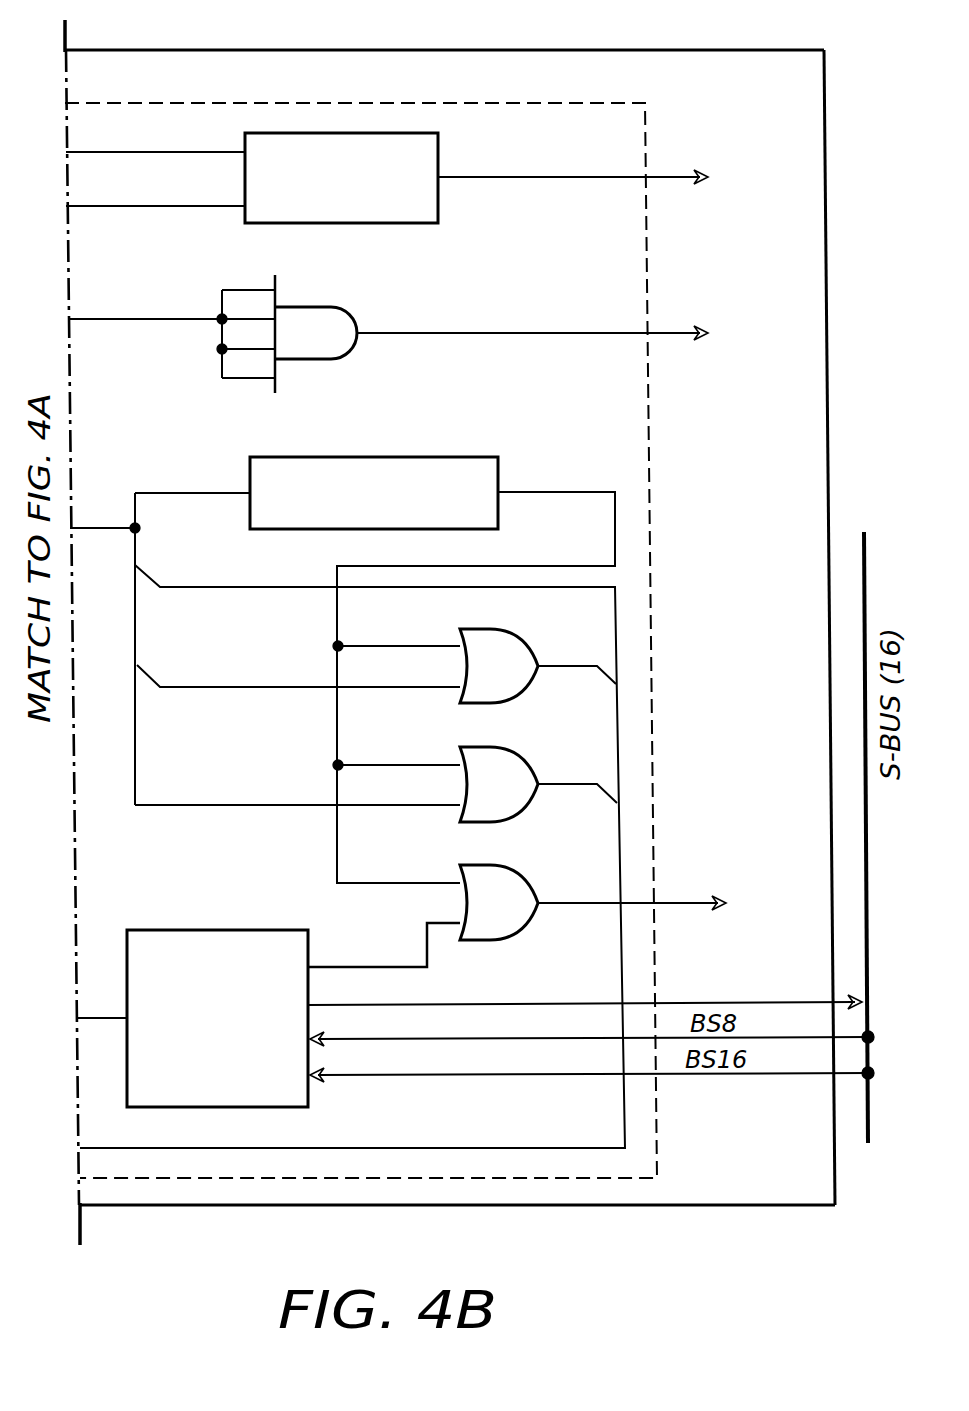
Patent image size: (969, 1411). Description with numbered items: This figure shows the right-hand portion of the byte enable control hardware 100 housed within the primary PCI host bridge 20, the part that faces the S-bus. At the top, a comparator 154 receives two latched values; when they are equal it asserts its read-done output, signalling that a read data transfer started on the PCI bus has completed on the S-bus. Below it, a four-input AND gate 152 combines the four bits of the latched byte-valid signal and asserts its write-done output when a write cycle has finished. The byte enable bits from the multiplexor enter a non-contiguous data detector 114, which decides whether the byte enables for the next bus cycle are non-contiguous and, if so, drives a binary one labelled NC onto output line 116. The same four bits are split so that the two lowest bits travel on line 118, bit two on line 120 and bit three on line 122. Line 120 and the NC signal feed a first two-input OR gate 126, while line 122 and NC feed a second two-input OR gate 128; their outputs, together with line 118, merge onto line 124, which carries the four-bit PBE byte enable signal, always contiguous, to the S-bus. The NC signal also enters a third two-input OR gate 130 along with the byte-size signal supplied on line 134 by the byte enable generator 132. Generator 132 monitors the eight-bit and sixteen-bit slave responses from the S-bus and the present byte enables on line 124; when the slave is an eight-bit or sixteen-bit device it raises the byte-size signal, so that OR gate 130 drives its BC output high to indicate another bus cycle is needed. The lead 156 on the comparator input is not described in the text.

The primary PCI host bridge 20 is at (368, 50).
The byte enable control hardware 100 is at (405, 103).
The comparator input line 156 is at (118, 152).
The comparator 154 is at (438, 218).
The four-input AND gate 152 is at (327, 307).
The non-contiguous data detector 114 is at (250, 480).
The output line 116 is at (615, 515).
The line 118 is at (360, 587).
The line 120 is at (360, 687).
The line 122 is at (360, 805).
The first two-input OR gate 126 is at (500, 635).
The second two-input OR gate 128 is at (500, 752).
The third two-input OR gate 130 is at (510, 870).
The byte enable generator 132 is at (210, 930).
The line 134 is at (427, 950).
The line 124 is at (525, 1003).